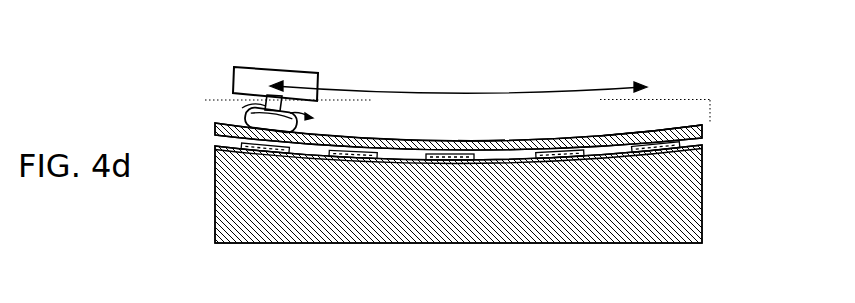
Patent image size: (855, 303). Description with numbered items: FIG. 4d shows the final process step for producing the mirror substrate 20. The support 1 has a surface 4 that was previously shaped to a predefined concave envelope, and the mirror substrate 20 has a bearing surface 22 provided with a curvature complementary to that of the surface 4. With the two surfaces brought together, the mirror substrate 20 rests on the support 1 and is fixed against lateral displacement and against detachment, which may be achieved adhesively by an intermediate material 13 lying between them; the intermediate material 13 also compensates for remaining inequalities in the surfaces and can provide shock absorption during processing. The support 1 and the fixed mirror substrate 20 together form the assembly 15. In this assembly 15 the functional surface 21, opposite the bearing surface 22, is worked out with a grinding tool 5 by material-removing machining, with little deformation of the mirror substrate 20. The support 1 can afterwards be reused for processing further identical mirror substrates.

The support 1 is at (703, 173).
The surface of the support 4 is at (505, 140).
The grinding tool 5 is at (290, 112).
The intermediate material 13 is at (703, 145).
The assembly 15 is at (244, 71).
The mirror substrate 20 is at (707, 125).
The functional surface 21 is at (650, 127).
The bearing surface 22 is at (407, 153).